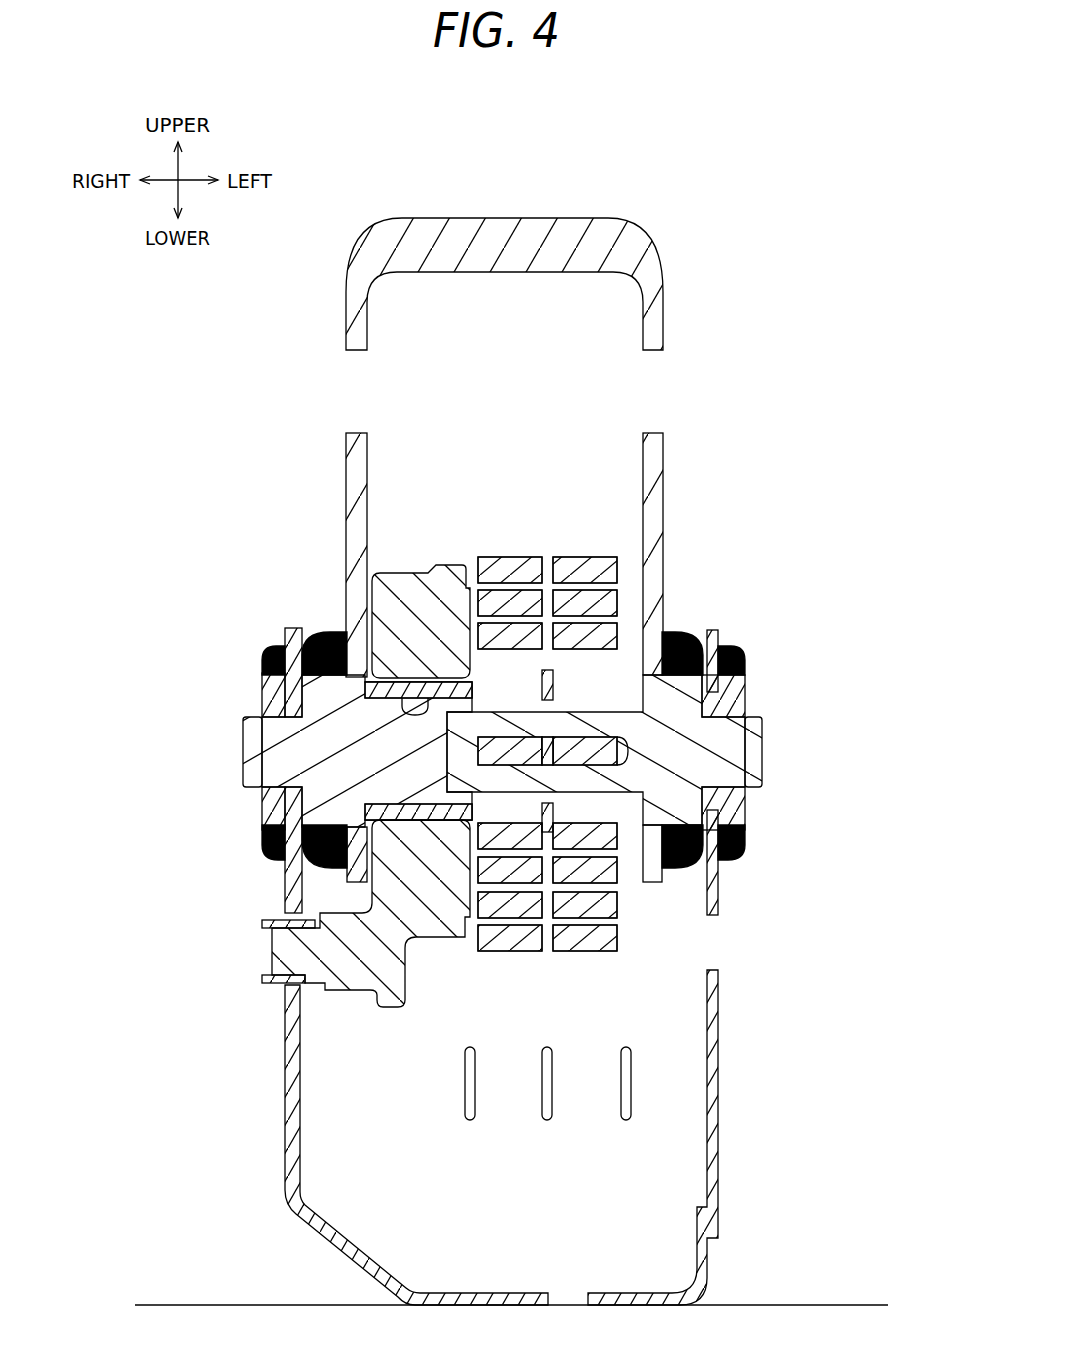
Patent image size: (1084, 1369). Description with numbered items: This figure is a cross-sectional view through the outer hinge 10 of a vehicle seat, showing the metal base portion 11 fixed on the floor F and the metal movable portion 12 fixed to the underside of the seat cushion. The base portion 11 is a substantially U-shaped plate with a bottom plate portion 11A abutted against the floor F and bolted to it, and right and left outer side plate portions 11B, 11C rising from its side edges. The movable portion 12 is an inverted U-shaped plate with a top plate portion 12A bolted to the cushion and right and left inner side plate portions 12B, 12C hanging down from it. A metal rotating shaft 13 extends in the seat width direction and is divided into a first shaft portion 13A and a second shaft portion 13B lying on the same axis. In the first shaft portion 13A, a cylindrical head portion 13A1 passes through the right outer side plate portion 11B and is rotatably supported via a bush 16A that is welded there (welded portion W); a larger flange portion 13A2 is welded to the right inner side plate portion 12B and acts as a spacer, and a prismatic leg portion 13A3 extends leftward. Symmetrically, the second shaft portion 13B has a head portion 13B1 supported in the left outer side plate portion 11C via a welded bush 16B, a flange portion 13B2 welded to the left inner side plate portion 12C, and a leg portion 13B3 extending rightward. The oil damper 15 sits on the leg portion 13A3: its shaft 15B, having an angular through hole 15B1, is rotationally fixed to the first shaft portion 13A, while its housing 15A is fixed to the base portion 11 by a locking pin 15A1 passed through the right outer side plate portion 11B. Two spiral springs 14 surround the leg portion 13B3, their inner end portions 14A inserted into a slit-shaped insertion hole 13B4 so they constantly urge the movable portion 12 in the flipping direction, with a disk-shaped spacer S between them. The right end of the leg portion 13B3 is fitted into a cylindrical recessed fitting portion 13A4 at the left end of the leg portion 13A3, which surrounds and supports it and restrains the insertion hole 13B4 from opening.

The outer hinge 10 is at (652, 141).
The movable portion 12 is at (657, 246).
The top plate portion 12A is at (520, 218).
The right inner side plate portion 12B is at (346, 508).
The left inner side plate portion 12C is at (665, 535).
The rotating shaft 13 is at (507, 715).
The first shaft portion 13A is at (306, 696).
The head portion 13A1 is at (255, 768).
The flange portion 13A2 is at (310, 800).
The leg portion 13A3 is at (292, 648).
The fitting portion 13A4 is at (483, 712).
The second shaft portion 13B is at (687, 790).
The head portion 13B1 is at (748, 752).
The flange portion 13B2 is at (718, 880).
The leg portion 13B3 is at (732, 708).
The insertion hole 13B4 is at (620, 765).
The spiral spring 14 is at (547, 791).
The inner end portion 14A is at (515, 750).
The oil damper 15 is at (315, 727).
The housing 15A is at (432, 915).
The locking pin 15A1 is at (275, 950).
The shaft 15B is at (412, 690).
The through hole 15B1 is at (430, 713).
The bush 16A is at (275, 698).
The bush 16B is at (740, 800).
The base portion 11 is at (503, 1137).
The bottom plate portion 11A is at (483, 1300).
The right outer side plate portion 11B is at (285, 1090).
The left outer side plate portion 11C is at (718, 1115).
The spacer S is at (553, 820).
The welded portion W is at (330, 640).
The floor F is at (190, 1303).